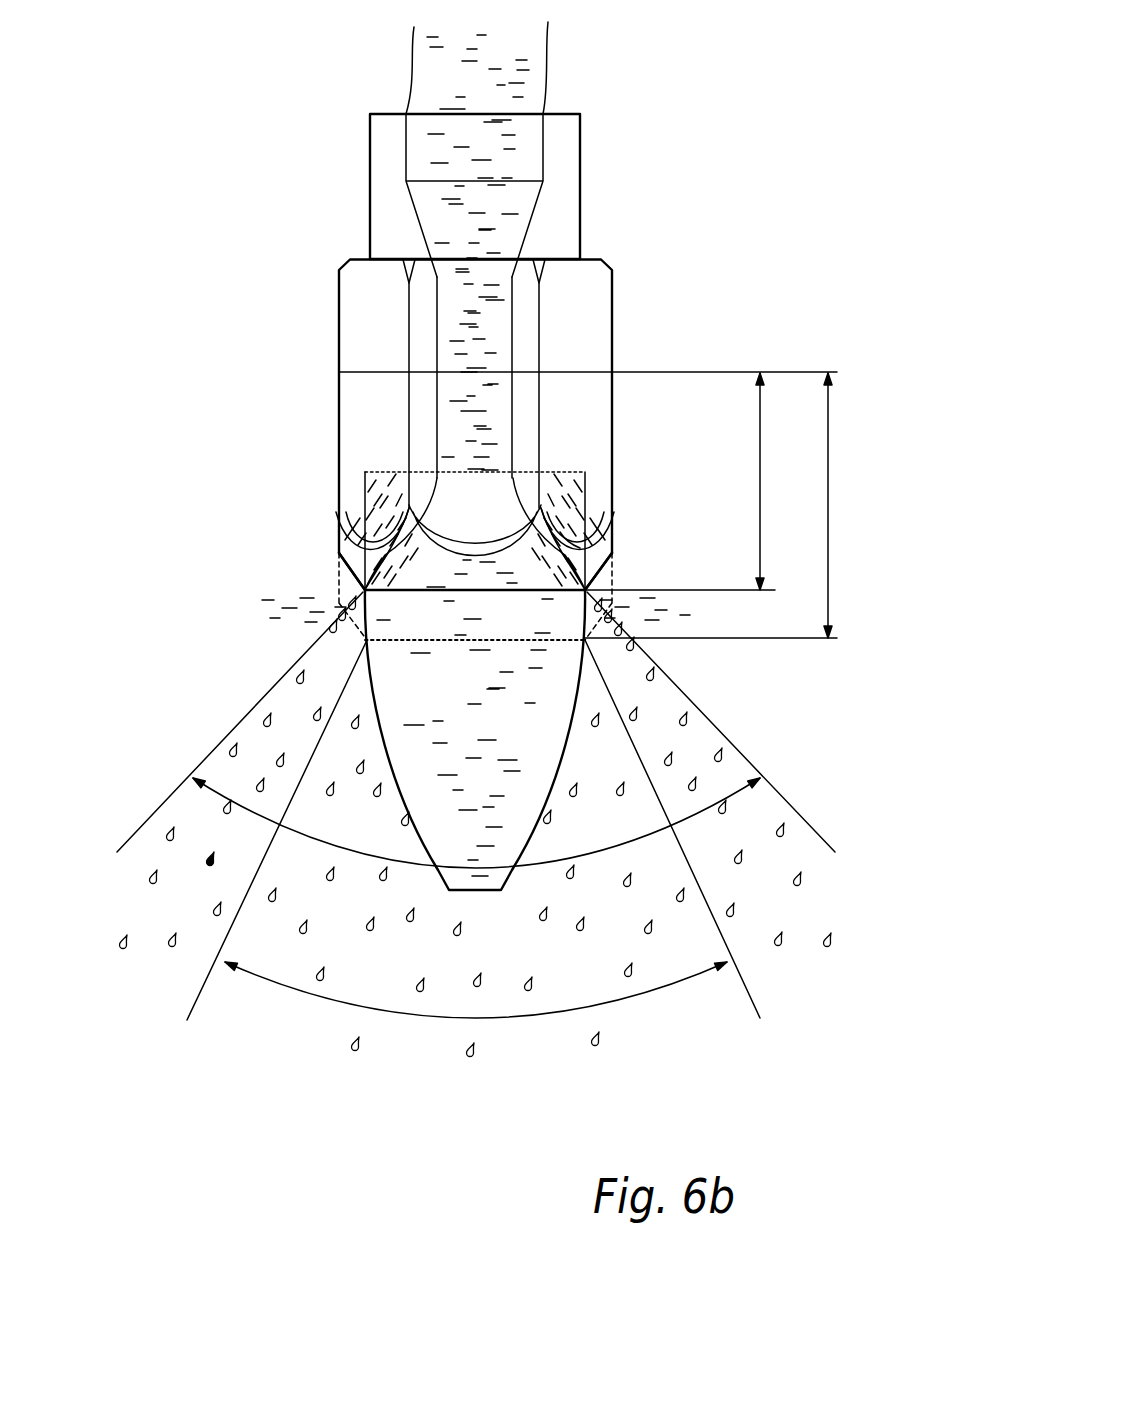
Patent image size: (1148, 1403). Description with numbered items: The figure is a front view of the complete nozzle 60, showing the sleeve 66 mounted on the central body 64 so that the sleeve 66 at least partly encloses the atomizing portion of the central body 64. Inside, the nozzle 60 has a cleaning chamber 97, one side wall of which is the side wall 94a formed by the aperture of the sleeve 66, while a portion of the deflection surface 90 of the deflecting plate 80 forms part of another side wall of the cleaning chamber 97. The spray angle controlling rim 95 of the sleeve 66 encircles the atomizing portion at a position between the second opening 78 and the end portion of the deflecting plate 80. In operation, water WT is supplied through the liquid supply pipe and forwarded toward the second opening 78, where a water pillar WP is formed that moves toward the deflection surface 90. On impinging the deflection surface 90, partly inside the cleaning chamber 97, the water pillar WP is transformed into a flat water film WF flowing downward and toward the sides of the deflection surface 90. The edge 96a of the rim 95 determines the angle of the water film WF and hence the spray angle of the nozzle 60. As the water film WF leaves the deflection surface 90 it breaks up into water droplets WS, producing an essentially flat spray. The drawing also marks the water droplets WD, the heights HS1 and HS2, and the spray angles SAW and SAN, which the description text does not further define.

The nozzle 60 is at (223, 120).
The central body 64 is at (339, 316).
The sleeve 66 is at (339, 457).
The second opening 78 is at (447, 490).
The deflecting plate 80 is at (513, 874).
The deflection surface 90 is at (423, 755).
The side wall 94a is at (560, 532).
The spray angle controlling rim 95 is at (592, 575).
The edge 96a is at (312, 650).
The cleaning chamber 97 is at (339, 553).
The water WT is at (516, 63).
The water pillar WP is at (488, 497).
The water droplets WD is at (338, 512).
The water droplets WS is at (228, 752).
The water film WF is at (520, 655).
The first height HS1 is at (703, 481).
The second height HS2 is at (737, 505).
The spray angle wide SAW is at (596, 858).
The spray angle narrow SAN is at (287, 1012).